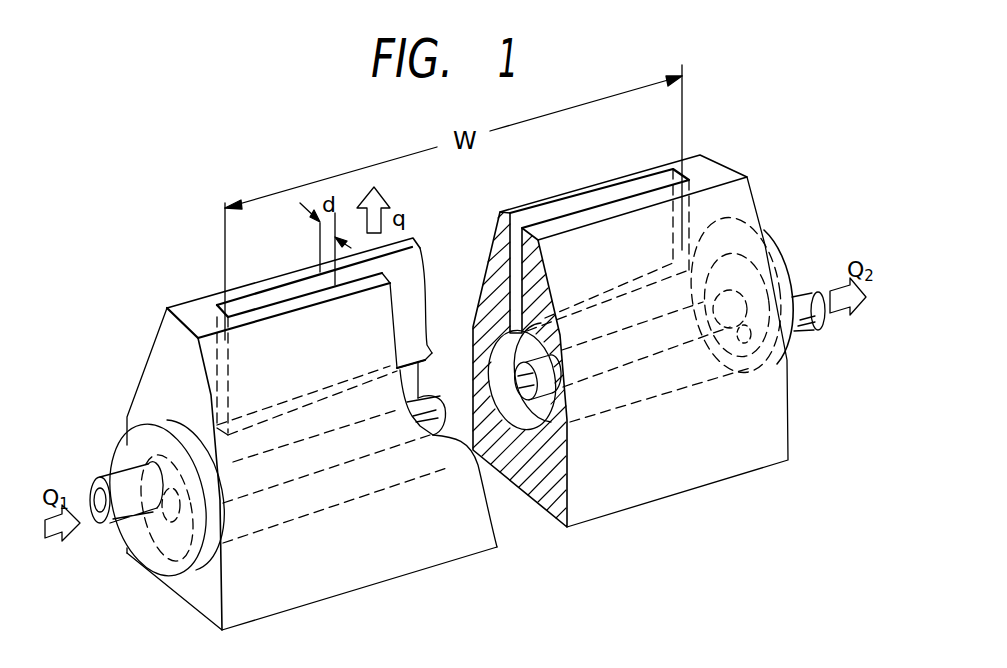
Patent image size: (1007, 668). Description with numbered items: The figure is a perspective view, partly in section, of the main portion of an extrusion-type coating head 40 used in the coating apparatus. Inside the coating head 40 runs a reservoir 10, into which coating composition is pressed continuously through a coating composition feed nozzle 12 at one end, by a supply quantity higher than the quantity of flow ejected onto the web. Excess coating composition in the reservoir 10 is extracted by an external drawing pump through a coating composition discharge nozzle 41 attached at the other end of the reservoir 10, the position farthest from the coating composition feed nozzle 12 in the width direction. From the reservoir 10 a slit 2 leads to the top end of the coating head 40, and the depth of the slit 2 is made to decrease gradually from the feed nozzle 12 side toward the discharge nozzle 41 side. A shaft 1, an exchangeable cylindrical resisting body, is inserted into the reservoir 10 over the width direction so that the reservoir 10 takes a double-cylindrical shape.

The shaft 1 is at (649, 344).
The slit 2 is at (603, 200).
The reservoir 10 is at (432, 362).
The coating composition feed nozzle 12 is at (103, 477).
The coating head 40 is at (200, 262).
The coating composition discharge nozzle 41 is at (803, 297).